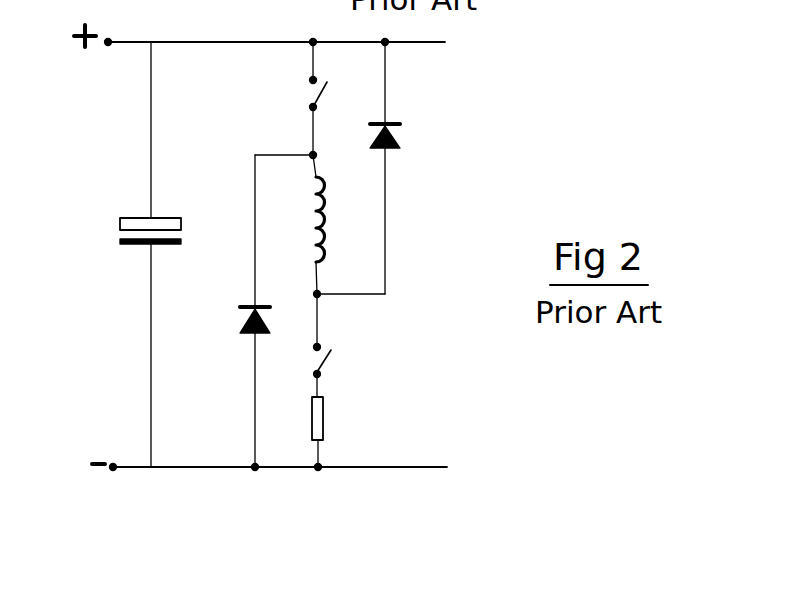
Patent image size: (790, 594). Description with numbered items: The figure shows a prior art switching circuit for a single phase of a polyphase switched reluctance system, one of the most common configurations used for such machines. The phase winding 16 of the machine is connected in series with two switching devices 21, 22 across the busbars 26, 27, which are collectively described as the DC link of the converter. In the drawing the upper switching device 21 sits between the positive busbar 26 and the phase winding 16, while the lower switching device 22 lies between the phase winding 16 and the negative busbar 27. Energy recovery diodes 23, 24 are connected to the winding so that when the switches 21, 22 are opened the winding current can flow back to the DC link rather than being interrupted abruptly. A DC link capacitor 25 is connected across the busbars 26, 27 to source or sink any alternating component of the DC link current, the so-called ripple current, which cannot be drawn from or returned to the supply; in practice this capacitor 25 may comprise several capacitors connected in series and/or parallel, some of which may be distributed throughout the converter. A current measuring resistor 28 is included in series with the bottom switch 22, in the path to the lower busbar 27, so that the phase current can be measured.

The phase winding 16 is at (333, 199).
The switching device 21 is at (312, 95).
The switching device 22 is at (332, 360).
The energy recovery diode 23 is at (405, 130).
The energy recovery diode 24 is at (238, 314).
The DC link capacitor 25 is at (113, 232).
The busbar 26 is at (227, 41).
The busbar 27 is at (210, 468).
The current measuring resistor 28 is at (327, 413).